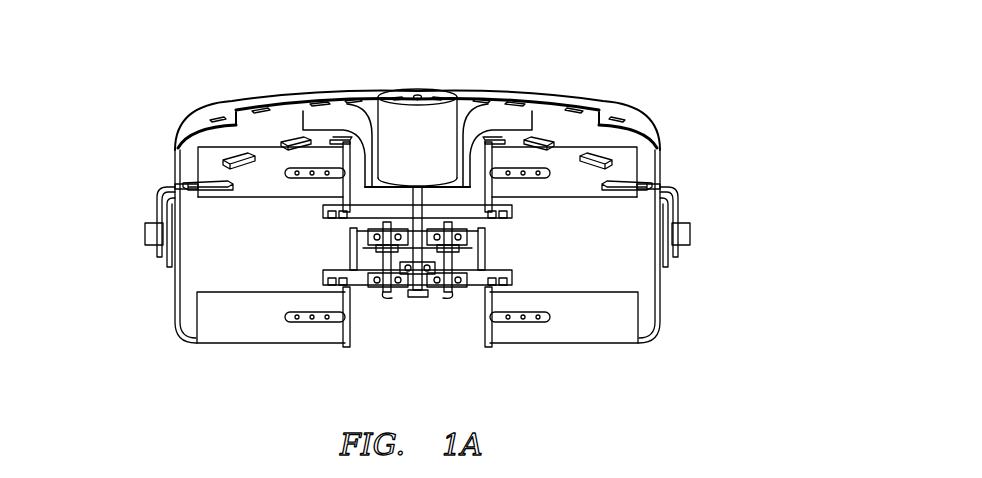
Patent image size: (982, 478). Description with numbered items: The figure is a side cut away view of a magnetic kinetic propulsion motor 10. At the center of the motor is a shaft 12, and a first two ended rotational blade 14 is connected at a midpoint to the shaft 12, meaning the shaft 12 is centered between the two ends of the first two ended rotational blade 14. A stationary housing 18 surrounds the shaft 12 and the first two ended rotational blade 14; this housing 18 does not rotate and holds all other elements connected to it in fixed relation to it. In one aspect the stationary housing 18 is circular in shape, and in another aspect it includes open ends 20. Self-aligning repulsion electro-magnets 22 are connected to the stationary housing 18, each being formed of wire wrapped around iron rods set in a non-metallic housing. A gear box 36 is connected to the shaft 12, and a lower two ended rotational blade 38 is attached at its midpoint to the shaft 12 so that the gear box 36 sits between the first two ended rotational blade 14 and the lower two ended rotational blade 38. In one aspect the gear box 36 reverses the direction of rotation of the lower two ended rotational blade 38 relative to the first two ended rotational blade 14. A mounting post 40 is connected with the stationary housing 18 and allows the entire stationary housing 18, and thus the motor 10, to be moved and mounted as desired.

The magnetic kinetic propulsion motor 10 is at (746, 100).
The shaft 12 is at (372, 192).
The first two ended rotational blade 14 is at (207, 153).
The stationary housing 18 is at (662, 168).
The open ends 20 is at (553, 127).
The self-aligning repulsion electro-magnets 22 is at (295, 140).
The gear box 36 is at (485, 252).
The lower two ended rotational blade 38 is at (237, 326).
The mounting post 40 is at (145, 235).